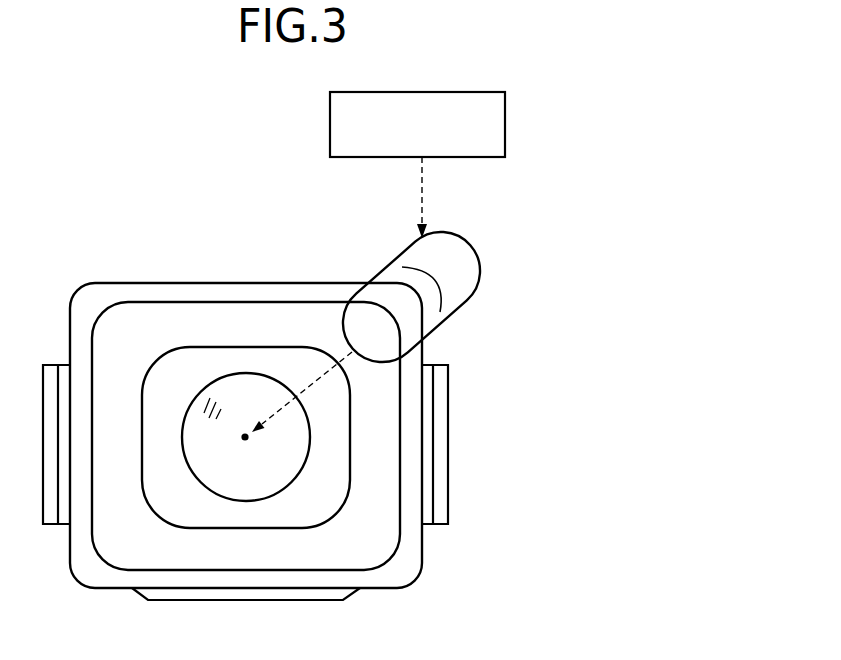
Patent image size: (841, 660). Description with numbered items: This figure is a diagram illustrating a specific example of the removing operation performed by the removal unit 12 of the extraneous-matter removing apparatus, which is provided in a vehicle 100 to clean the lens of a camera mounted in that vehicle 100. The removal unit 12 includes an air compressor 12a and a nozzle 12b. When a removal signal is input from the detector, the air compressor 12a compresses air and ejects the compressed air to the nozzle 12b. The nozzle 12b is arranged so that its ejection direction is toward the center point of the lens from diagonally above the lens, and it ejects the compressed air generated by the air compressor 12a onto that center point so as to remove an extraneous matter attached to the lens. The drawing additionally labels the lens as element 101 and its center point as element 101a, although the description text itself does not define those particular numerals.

The vehicle 100 is at (130, 276).
The lens 101 is at (215, 470).
The lens center point 101a is at (246, 441).
The removal unit 12 is at (470, 262).
The air compressor 12a is at (505, 123).
The nozzle 12b is at (477, 243).